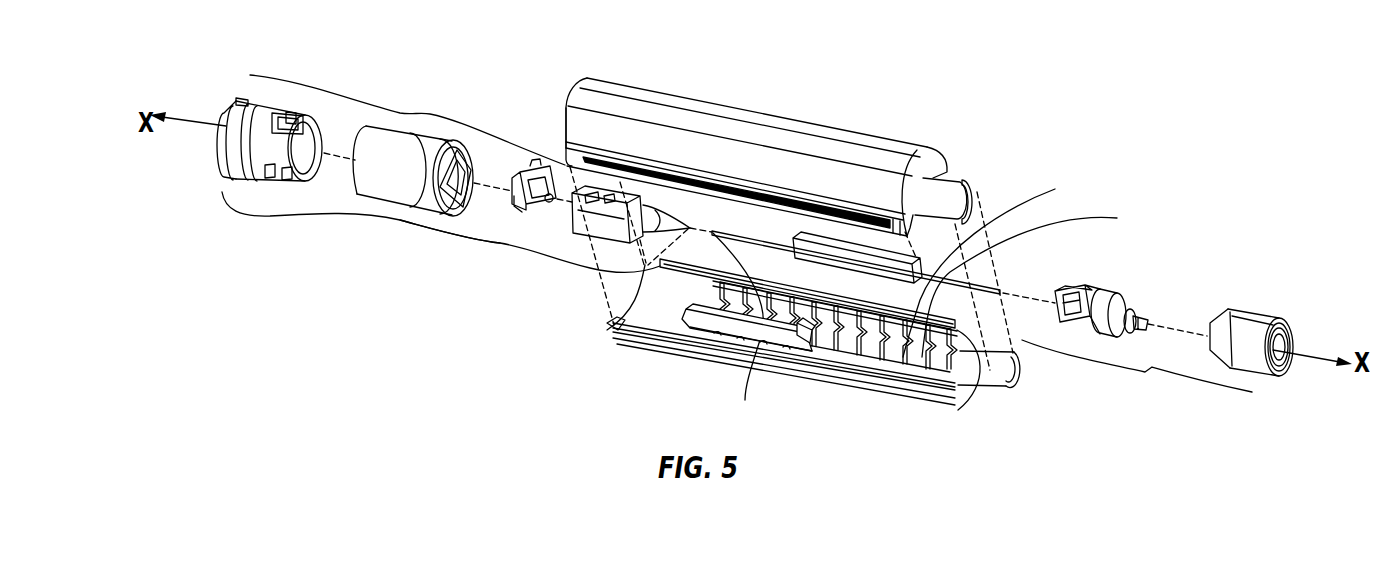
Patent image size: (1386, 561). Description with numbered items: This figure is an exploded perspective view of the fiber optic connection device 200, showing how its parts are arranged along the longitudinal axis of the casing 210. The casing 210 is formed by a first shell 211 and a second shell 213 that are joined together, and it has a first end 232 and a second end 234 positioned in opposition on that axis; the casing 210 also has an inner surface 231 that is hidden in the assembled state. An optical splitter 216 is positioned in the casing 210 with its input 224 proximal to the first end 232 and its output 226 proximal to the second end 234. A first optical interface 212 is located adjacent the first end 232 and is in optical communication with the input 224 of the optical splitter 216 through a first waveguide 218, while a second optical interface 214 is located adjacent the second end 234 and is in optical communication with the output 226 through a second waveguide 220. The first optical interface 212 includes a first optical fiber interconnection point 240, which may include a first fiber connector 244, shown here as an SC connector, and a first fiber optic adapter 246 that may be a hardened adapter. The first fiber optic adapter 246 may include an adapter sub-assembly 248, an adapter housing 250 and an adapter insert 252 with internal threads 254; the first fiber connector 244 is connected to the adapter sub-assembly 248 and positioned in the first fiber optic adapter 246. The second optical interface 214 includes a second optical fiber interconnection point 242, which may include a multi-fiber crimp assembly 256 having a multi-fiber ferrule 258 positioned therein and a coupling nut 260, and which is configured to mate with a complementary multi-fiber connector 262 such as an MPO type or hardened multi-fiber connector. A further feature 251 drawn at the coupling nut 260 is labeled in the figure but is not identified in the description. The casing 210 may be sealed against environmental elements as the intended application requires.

The fiber optic connection device 200 is at (1017, 147).
The casing 210 is at (884, 132).
The first shell 211 is at (639, 88).
The first optical interface 212 is at (340, 228).
The second shell 213 is at (667, 353).
The second optical interface 214 is at (1006, 380).
The optical splitter 216 is at (900, 253).
The first waveguide 218 is at (740, 230).
The second waveguide 220 is at (925, 285).
The input 224 is at (792, 252).
The output 226 is at (900, 340).
The inner surface 231 is at (807, 327).
The first end 232 is at (570, 108).
The second end 234 is at (947, 170).
The first optical fiber interconnection point 240 is at (465, 237).
The second optical fiber interconnection point 242 is at (1137, 375).
The first fiber connector 244 is at (612, 233).
The first fiber optic adapter 246 is at (413, 110).
The adapter sub-assembly 248 is at (530, 213).
The adapter housing 250 is at (385, 138).
The threads 251 is at (1274, 348).
The adapter insert 252 is at (218, 185).
The internal threads 254 is at (228, 100).
The multi-fiber crimp assembly 256 is at (1127, 295).
The multi-fiber ferrule 258 is at (1142, 320).
The coupling nut 260 is at (1280, 384).
The multi-fiber connector 262 is at (693, 330).